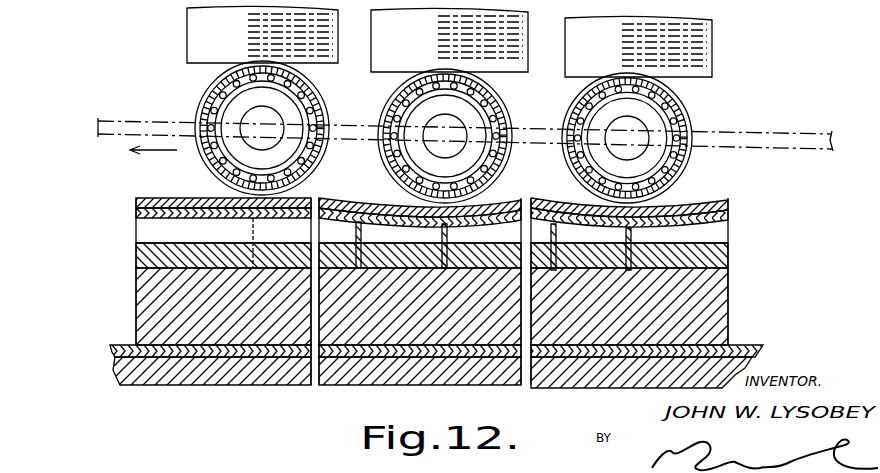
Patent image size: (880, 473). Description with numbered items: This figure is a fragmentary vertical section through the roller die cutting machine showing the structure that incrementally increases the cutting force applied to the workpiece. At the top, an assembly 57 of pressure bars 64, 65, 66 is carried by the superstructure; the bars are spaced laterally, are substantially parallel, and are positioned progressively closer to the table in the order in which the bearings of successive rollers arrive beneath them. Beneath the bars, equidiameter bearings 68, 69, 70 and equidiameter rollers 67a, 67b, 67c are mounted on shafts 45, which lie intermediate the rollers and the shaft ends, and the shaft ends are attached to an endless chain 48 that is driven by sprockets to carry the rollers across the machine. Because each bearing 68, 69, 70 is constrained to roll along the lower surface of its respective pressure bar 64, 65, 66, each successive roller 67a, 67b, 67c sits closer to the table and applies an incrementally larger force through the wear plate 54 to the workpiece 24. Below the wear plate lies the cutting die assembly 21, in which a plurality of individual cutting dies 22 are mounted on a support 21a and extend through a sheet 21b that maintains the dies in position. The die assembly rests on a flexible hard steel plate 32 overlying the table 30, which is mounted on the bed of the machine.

The assembly of pressure bars 57 is at (129, 26).
The pressure bar 64 is at (187, 50).
The pressure bar 65 is at (371, 50).
The pressure bar 66 is at (712, 47).
The bearing 68 is at (322, 84).
The bearing 69 is at (506, 91).
The bearing 70 is at (681, 99).
The roller 67a is at (212, 173).
The roller 67b is at (394, 178).
The roller 67c is at (577, 176).
The shaft 45 is at (647, 127).
The endless chain 48 is at (795, 136).
The wear plate 54 is at (730, 203).
The workpiece 24 is at (727, 216).
The cutting die 22 is at (250, 228).
The cutting die assembly 21 is at (744, 312).
The sheet 21b is at (136, 248).
The support 21a is at (136, 283).
The flexible hard steel plate 32 is at (110, 350).
The table 30 is at (118, 385).